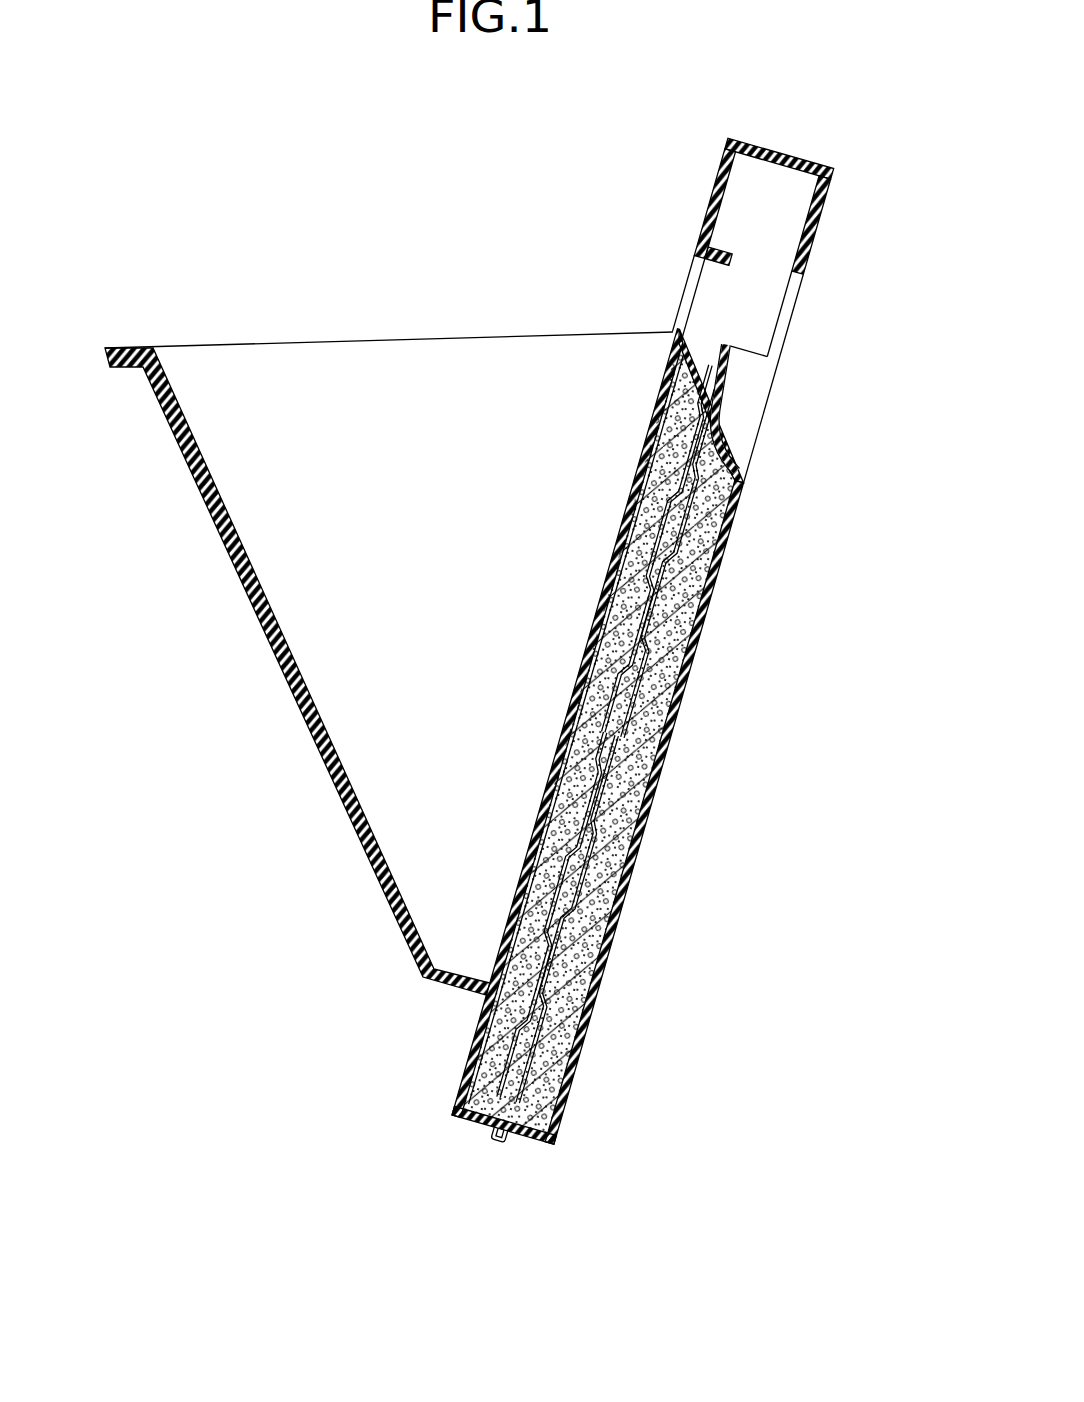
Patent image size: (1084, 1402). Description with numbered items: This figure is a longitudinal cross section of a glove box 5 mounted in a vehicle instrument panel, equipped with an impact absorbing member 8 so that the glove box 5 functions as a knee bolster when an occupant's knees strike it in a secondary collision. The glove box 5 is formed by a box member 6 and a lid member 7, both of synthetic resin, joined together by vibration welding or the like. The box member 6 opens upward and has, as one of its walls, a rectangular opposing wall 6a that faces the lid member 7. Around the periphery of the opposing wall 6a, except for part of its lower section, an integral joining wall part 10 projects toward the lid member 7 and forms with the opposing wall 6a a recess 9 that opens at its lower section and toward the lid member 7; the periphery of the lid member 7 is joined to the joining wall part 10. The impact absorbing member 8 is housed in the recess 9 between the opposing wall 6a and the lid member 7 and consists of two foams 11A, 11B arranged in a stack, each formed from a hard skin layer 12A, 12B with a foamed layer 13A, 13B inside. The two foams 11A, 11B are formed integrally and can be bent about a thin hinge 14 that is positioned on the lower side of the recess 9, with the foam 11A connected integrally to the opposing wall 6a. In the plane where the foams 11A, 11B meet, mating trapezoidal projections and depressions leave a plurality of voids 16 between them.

The glove box 5 is at (389, 682).
The box member 6 is at (287, 680).
The opposing wall 6a is at (627, 490).
The lid member 7 is at (615, 737).
The impact absorbing member 8 is at (722, 472).
The recess 9 is at (470, 1083).
The joining wall part 10 is at (790, 147).
The foam 11A is at (549, 545).
The hard skin layer 12A is at (590, 647).
The foamed layer 13A is at (620, 557).
The foam 11B is at (675, 914).
The hard skin layer 12B is at (638, 862).
The foamed layer 13B is at (773, 835).
The hinge 14 is at (499, 1142).
The void 16 is at (695, 515).